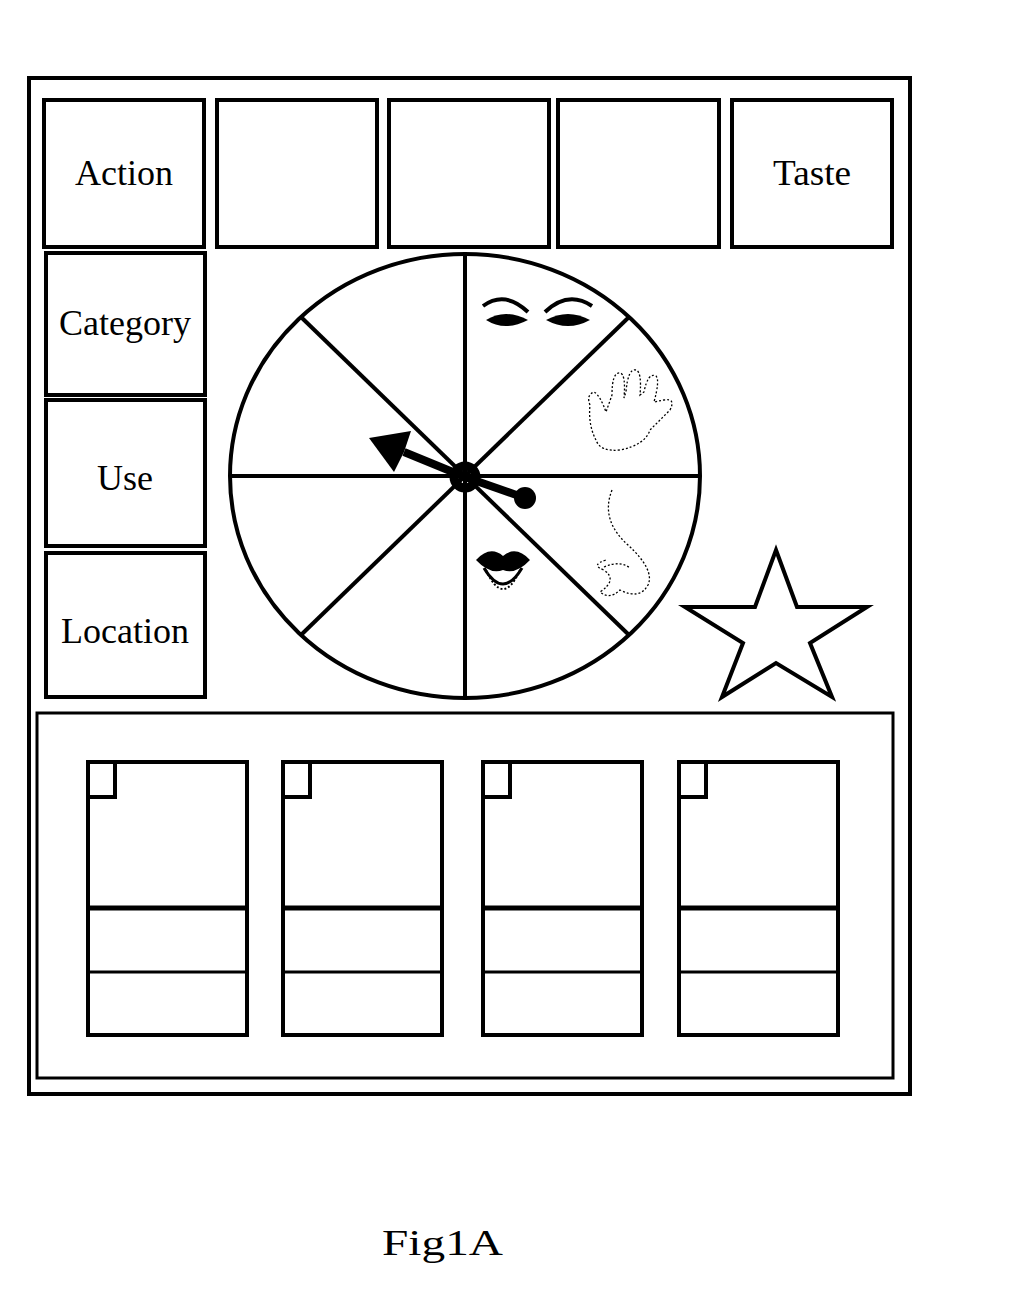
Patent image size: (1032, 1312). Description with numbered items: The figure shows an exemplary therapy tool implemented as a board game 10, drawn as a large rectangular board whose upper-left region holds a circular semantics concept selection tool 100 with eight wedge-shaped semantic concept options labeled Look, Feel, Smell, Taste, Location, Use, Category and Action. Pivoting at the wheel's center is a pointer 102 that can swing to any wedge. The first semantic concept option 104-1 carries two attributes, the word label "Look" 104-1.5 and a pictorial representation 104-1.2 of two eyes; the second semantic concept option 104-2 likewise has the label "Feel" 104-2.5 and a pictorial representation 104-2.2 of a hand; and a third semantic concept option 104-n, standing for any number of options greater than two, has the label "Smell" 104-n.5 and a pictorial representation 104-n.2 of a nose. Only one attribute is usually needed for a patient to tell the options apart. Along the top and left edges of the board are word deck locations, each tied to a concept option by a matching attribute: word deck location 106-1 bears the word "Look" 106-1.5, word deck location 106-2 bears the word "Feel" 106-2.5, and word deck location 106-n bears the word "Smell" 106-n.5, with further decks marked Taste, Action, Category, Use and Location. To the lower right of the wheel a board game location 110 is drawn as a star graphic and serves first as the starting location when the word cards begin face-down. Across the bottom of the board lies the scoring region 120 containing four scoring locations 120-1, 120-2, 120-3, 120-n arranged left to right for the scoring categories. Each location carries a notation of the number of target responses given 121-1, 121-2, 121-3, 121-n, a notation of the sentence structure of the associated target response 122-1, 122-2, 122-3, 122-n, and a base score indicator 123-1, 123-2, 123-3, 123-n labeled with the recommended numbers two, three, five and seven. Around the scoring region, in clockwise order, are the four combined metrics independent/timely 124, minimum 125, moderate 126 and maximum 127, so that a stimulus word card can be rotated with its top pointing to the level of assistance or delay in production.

The board game 10 is at (771, 38).
The semantics concept selection tool 100 is at (270, 343).
The spinner pointer 102 is at (383, 413).
The first semantic concept option 104-1 is at (657, 365).
The pictorial representation of two eyes 104-1.2 is at (588, 318).
The label "Look" 104-1.5 is at (567, 363).
The second semantic concept option 104-2 is at (658, 397).
The pictorial representation of hand 104-2.2 is at (660, 397).
The label "Feel" 104-2.5 is at (628, 438).
The third semantic concept option 104-n is at (663, 536).
The label "Smell" 104-n.5 is at (627, 517).
The pictorial representation of nose 104-n.2 is at (650, 542).
The word deck location 106-1 is at (238, 130).
The word "Look" 106-1.5 is at (265, 157).
The word deck location 106-2 is at (414, 142).
The word "Feel" 106-2.5 is at (440, 157).
The word deck location 106-n is at (585, 130).
The word "Smell" 106-n.5 is at (608, 165).
The board game location 110 is at (857, 620).
The scoring region 120 is at (478, 953).
The scoring location 120-1 is at (167, 977).
The notation of number of target responses given 121-1 is at (142, 954).
The notation of sentence structure associated target response 122-1 is at (132, 990).
The base score indicator 123-1 is at (100, 800).
The scoring location 120-2 is at (362, 977).
The notation of number of target responses given 121-2 is at (342, 954).
The notation of sentence structure associated target response 122-2 is at (332, 990).
The base score indicator 123-2 is at (298, 800).
The scoring location 120-3 is at (576, 977).
The notation of number of target responses given 121-3 is at (582, 954).
The notation of sentence structure associated target response 122-3 is at (584, 992).
The base score indicator 123-3 is at (496, 800).
The scoring location 120-n is at (758, 977).
The notation of number of target responses given 121-n is at (735, 960).
The notation of sentence structure associated target response 122-n is at (733, 992).
The base score indicator 123-n is at (694, 800).
The independent/timely metric 124 is at (455, 752).
The minimum metric 125 is at (854, 992).
The moderate metric 126 is at (466, 1052).
The maximum metric 127 is at (57, 988).